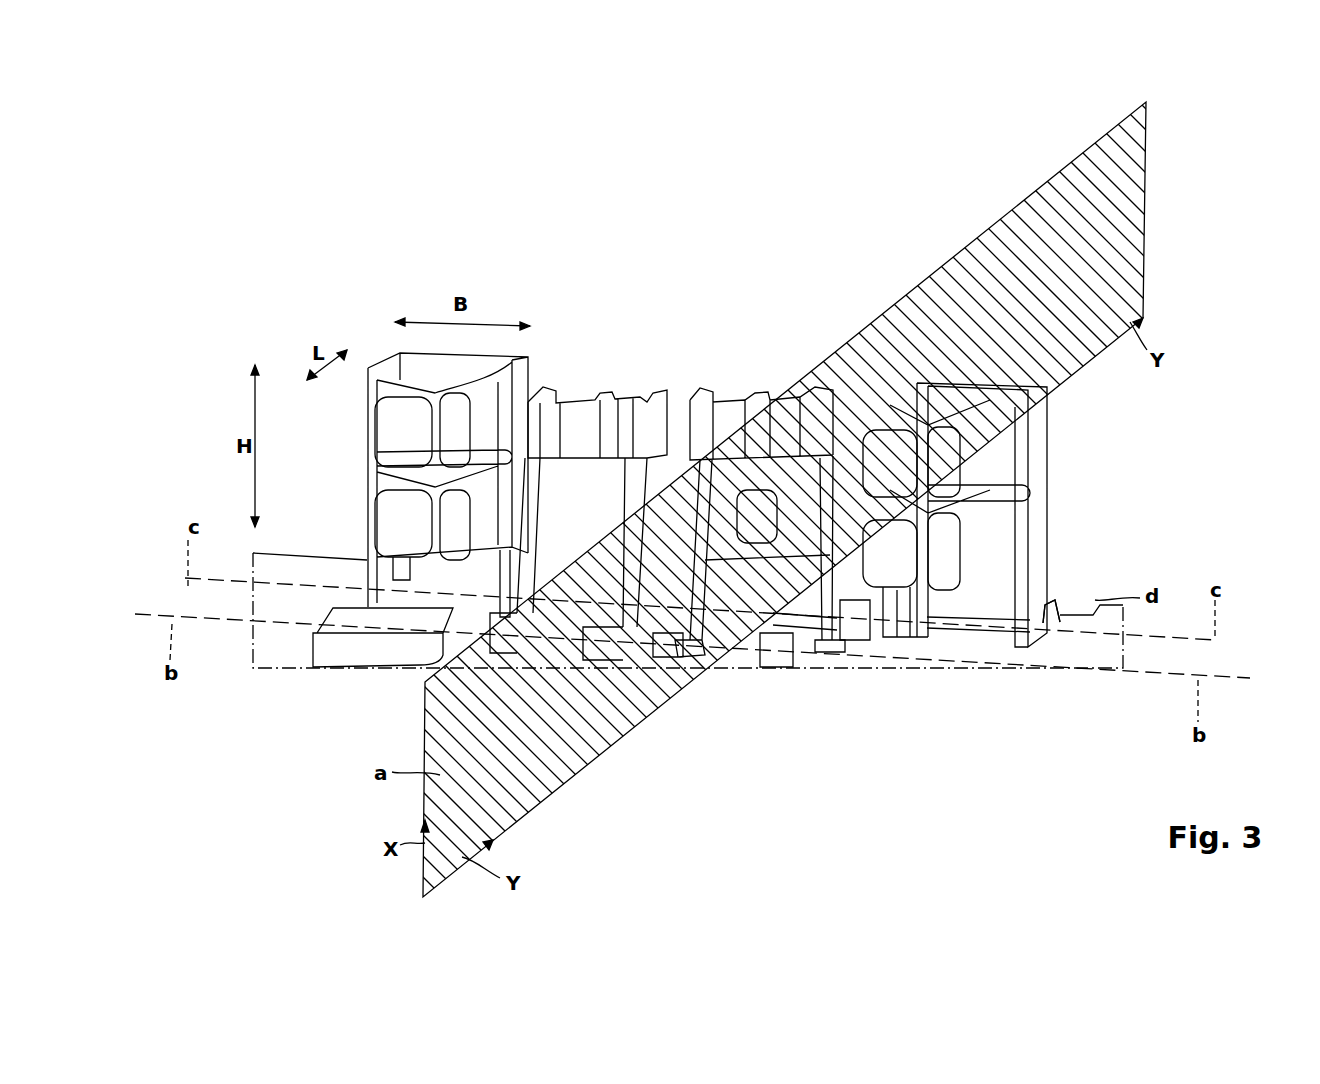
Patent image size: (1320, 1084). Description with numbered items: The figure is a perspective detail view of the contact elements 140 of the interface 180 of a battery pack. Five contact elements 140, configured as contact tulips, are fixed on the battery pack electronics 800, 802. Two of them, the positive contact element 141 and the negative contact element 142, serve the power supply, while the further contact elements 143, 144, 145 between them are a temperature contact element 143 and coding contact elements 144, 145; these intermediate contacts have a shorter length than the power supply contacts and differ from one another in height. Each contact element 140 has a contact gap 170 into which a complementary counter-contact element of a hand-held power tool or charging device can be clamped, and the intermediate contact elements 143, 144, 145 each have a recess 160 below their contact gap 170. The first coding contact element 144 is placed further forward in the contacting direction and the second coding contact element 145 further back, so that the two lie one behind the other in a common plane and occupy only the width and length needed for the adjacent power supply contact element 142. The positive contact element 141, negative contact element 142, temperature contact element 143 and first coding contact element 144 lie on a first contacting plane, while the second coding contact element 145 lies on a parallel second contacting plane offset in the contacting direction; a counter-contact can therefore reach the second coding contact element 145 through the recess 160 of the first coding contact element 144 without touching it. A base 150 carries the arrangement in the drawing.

The contact elements 140 is at (847, 275).
The positive contact element 141 is at (390, 366).
The negative contact element 142 is at (1040, 447).
The temperature contact element 143 is at (637, 395).
The first coding contact element 144 is at (712, 400).
The second coding contact element 145 is at (880, 578).
The carrier plate 150 is at (693, 636).
The recess 160 is at (587, 513).
The contact gap 170 is at (440, 390).
The interface 180 is at (722, 240).
The battery pack electronics 800 is at (1087, 590).
The mating region 802 is at (1072, 625).